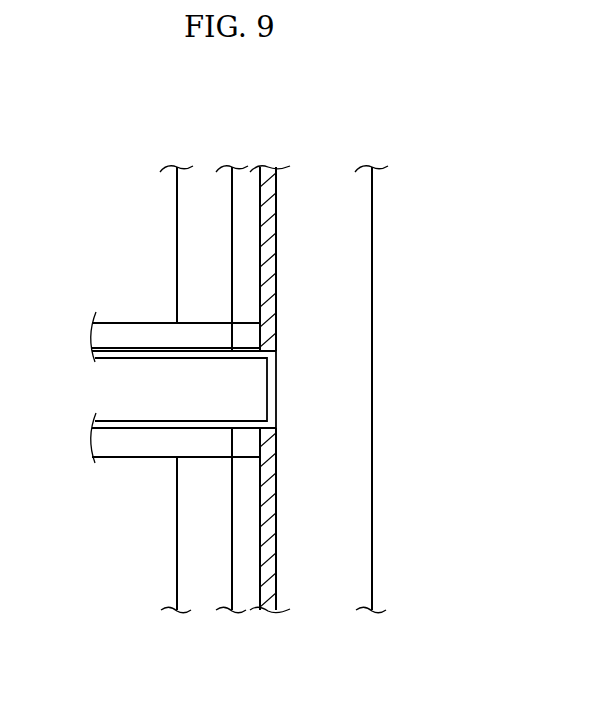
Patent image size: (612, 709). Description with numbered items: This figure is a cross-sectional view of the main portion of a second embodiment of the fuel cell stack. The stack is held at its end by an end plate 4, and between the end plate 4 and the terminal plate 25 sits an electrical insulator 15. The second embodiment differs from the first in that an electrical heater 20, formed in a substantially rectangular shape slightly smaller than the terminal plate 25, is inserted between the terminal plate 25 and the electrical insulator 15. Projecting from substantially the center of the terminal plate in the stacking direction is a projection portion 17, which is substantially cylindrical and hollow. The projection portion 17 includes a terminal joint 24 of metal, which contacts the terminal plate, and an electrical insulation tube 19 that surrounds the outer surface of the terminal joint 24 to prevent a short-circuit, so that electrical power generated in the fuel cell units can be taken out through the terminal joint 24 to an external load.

The end plate 4 is at (207, 177).
The electrical insulator 15 is at (247, 183).
The projection portion 17 is at (134, 323).
The electrical insulation tube 19 is at (127, 445).
The electrical heater 20 is at (267, 183).
The terminal joint 24 is at (127, 423).
The terminal plate 25 is at (353, 342).